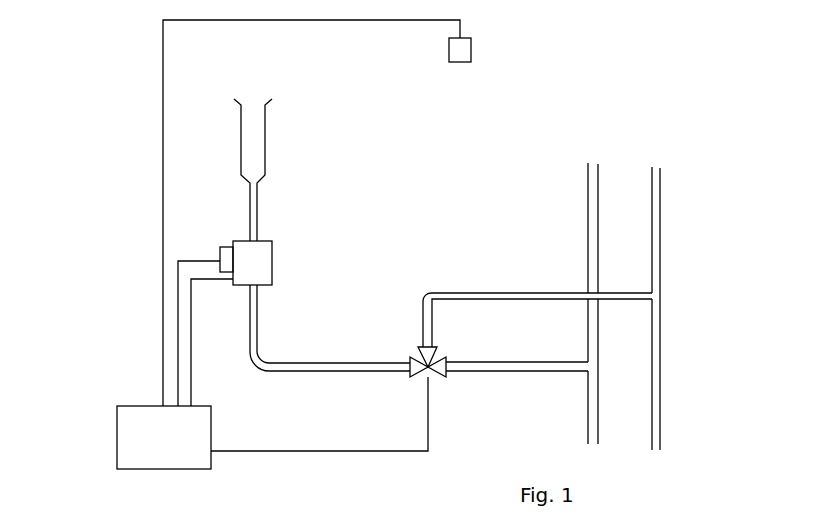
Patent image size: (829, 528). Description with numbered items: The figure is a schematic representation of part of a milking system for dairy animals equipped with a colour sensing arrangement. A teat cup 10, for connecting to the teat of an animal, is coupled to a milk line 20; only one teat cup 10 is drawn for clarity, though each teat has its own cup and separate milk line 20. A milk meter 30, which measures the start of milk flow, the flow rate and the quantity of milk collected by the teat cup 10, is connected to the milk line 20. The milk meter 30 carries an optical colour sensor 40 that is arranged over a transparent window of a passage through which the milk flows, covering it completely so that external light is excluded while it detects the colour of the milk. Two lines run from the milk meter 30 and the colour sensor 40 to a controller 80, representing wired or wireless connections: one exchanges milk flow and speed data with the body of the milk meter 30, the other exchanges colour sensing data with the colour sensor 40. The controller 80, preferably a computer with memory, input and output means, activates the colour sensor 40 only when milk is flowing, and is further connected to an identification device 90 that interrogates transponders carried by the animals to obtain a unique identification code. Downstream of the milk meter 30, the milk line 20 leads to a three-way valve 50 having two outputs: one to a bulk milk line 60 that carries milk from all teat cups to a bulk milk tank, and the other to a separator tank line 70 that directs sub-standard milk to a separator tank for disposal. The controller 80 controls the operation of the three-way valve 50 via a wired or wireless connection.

The teat cup 10 is at (266, 161).
The milk line 20 is at (317, 363).
The milk meter 30 is at (272, 251).
The colour sensor 40 is at (220, 248).
The three-way valve 50 is at (433, 370).
The bulk milk line 60 is at (588, 236).
The separator tank line 70 is at (660, 388).
The controller 80 is at (117, 437).
The identification device 90 is at (471, 52).